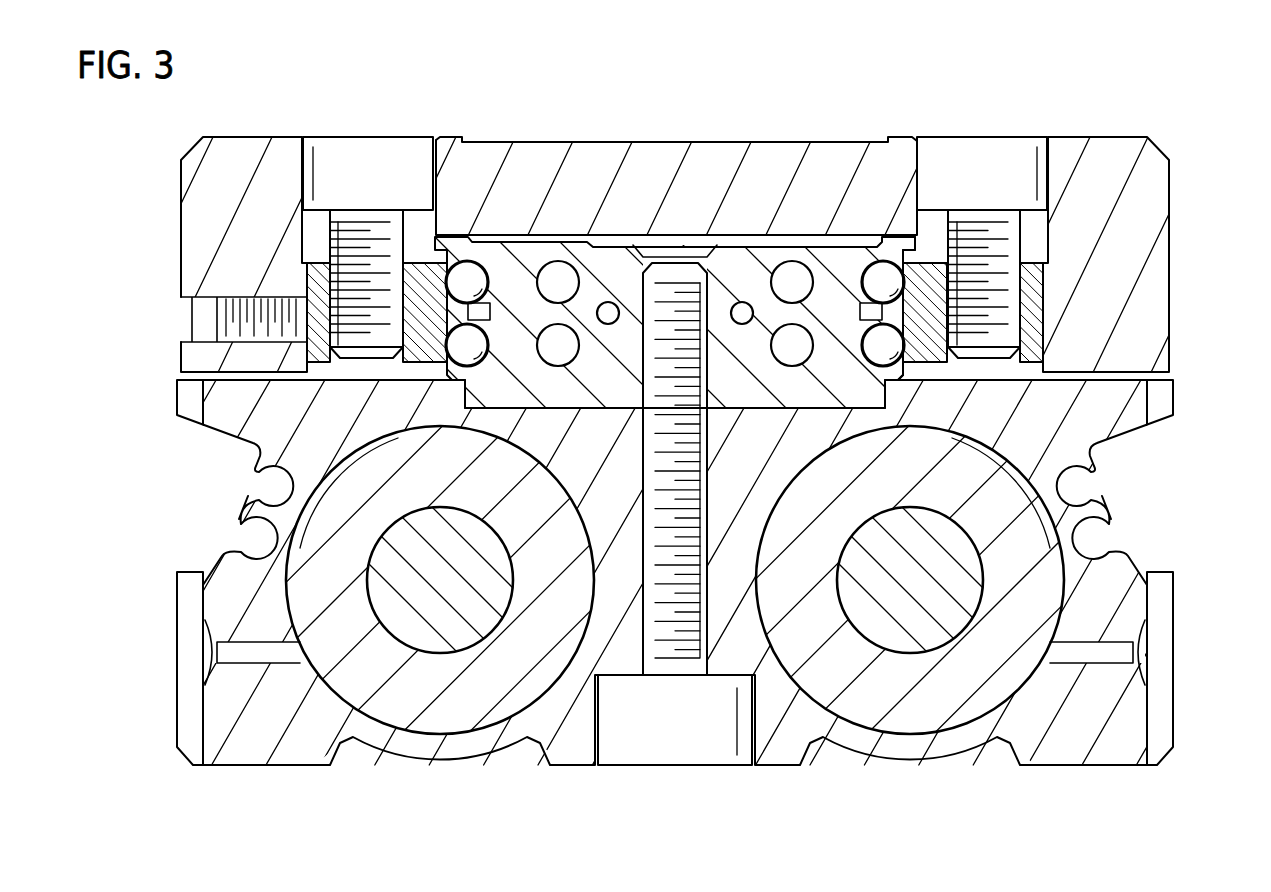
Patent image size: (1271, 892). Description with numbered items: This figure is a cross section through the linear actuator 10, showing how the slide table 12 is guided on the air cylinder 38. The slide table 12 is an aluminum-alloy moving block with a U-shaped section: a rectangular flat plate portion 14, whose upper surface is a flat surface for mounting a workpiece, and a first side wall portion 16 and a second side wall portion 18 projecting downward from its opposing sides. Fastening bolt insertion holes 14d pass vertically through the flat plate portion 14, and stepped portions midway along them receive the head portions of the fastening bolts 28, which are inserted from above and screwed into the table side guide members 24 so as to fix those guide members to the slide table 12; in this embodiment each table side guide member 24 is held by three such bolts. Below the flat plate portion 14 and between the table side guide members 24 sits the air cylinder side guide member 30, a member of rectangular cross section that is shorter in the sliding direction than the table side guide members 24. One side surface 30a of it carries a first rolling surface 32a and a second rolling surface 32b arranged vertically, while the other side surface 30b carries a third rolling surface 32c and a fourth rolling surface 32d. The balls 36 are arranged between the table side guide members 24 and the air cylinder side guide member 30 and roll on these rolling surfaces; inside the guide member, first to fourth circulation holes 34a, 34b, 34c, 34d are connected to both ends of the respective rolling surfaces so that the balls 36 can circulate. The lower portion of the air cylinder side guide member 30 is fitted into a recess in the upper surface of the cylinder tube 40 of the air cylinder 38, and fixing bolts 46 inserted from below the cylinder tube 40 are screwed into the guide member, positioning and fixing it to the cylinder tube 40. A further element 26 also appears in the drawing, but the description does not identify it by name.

The linear actuator 10 is at (646, 76).
The slide table 12 is at (1079, 127).
The flat plate portion 14 is at (700, 162).
The fastening bolt insertion holes 14d is at (428, 168).
The first side wall portion 16 is at (274, 254).
The second side wall portion 18 is at (1150, 213).
The table side guide members 24 is at (313, 292).
The threaded hole 26 is at (217, 318).
The fastening bolts 28 is at (362, 150).
The air cylinder side guide member 30 is at (700, 329).
The one side surface 30a is at (490, 312).
The another side surface 30b is at (880, 310).
The first rolling surface 32a is at (465, 270).
The second rolling surface 32b is at (463, 347).
The third rolling surface 32c is at (880, 270).
The fourth rolling surface 32d is at (883, 355).
The first circulation hole 34a is at (558, 280).
The second circulation hole 34b is at (547, 347).
The third circulation hole 34c is at (790, 272).
The fourth circulation hole 34d is at (792, 347).
The balls 36 is at (902, 383).
The air cylinder 38 is at (293, 775).
The cylinder tube 40 is at (1073, 750).
The fixing bolts 46 is at (686, 748).